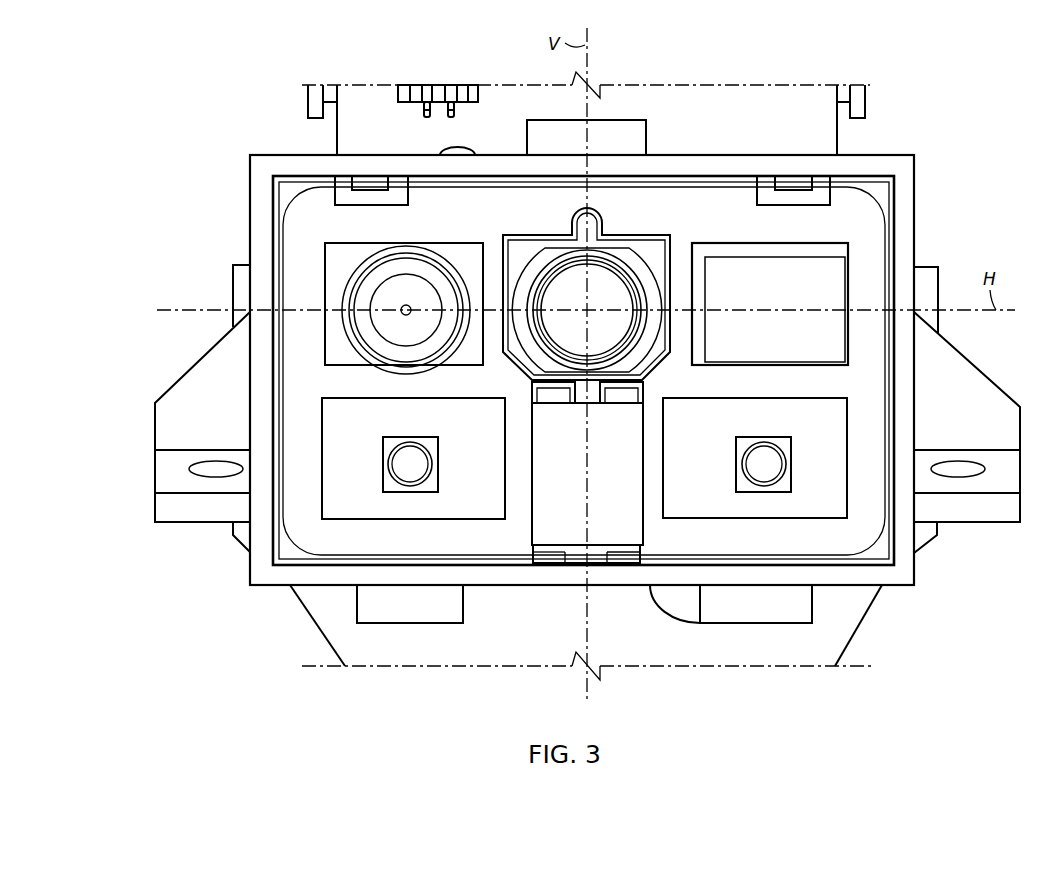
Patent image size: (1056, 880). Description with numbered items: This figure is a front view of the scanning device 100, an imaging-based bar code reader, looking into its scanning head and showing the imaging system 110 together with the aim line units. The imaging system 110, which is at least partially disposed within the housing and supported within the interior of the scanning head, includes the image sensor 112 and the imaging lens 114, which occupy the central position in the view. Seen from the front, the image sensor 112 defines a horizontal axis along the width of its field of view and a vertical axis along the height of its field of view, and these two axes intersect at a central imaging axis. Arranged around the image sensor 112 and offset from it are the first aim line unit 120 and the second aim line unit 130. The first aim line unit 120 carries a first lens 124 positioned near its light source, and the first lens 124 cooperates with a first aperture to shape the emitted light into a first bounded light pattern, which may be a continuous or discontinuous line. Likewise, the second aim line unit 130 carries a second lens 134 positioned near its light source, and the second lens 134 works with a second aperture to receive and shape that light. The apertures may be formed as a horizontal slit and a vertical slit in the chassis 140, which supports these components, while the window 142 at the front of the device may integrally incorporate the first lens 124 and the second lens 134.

The scanning device 100 is at (164, 86).
The imaging system 110 is at (774, 218).
The image sensor 112 is at (570, 288).
The imaging lens 114 is at (622, 272).
The first aim line unit 120 is at (890, 222).
The first lens 124 is at (852, 355).
The second aim line unit 130 is at (518, 519).
The second lens 134 is at (607, 535).
The chassis 140 is at (218, 370).
The window 142 is at (905, 563).